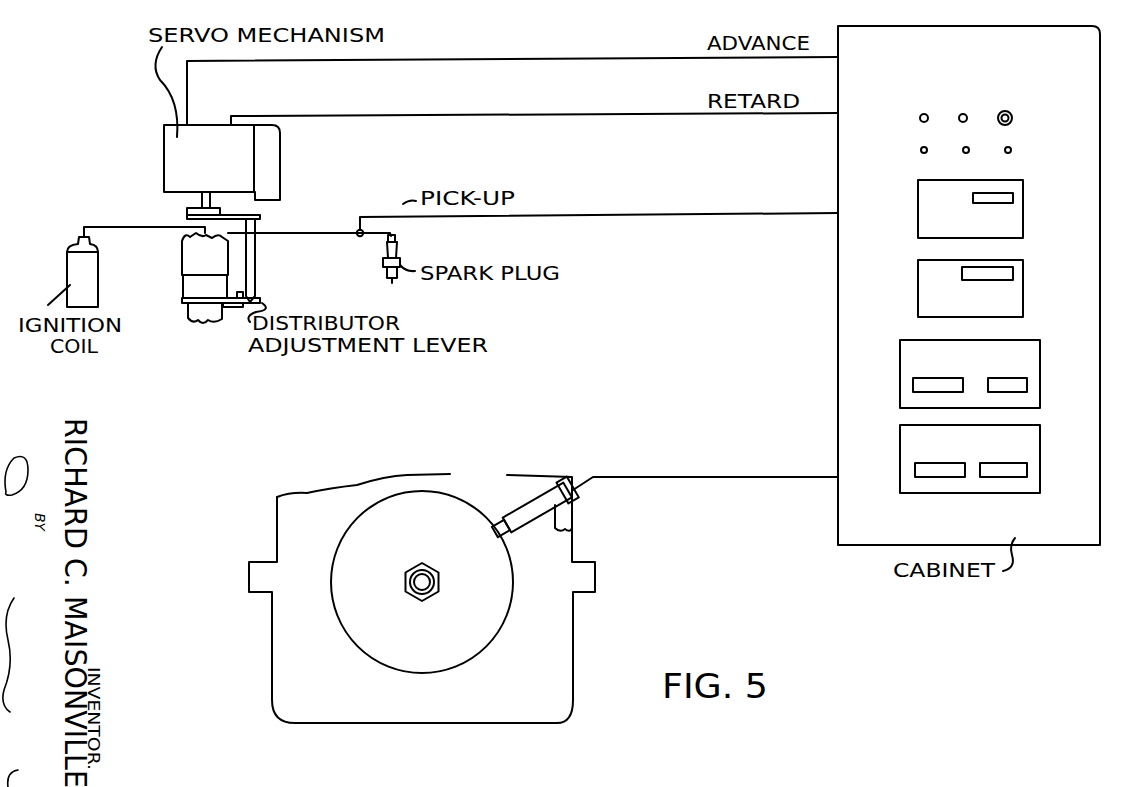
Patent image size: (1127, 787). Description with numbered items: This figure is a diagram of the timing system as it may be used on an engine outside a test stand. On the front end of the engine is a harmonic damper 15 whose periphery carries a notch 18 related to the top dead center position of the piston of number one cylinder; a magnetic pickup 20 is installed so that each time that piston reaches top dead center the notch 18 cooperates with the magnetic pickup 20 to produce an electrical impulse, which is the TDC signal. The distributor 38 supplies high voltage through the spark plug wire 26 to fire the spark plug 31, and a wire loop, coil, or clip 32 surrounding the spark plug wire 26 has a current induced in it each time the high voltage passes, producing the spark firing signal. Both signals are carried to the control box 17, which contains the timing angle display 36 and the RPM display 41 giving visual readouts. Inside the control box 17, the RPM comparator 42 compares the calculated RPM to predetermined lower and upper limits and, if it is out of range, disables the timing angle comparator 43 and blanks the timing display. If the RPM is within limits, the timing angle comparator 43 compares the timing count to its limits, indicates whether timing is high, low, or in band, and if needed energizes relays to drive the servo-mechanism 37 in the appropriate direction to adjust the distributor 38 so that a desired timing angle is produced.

The harmonic damper 15 is at (403, 502).
The control box 17 is at (838, 299).
The notch 18 is at (497, 522).
The magnetic pickup 20 is at (551, 498).
The spark plug wire 26 is at (315, 238).
The spark plug 31 is at (386, 260).
The wire loop, coil, or clip 32 is at (357, 231).
The timing angle display 36 is at (1023, 222).
The servo-mechanism 37 is at (167, 160).
The distributor 38 is at (188, 286).
The RPM display 41 is at (1023, 296).
The RPM comparator 42 is at (1040, 448).
The timing angle comparator 43 is at (1040, 364).